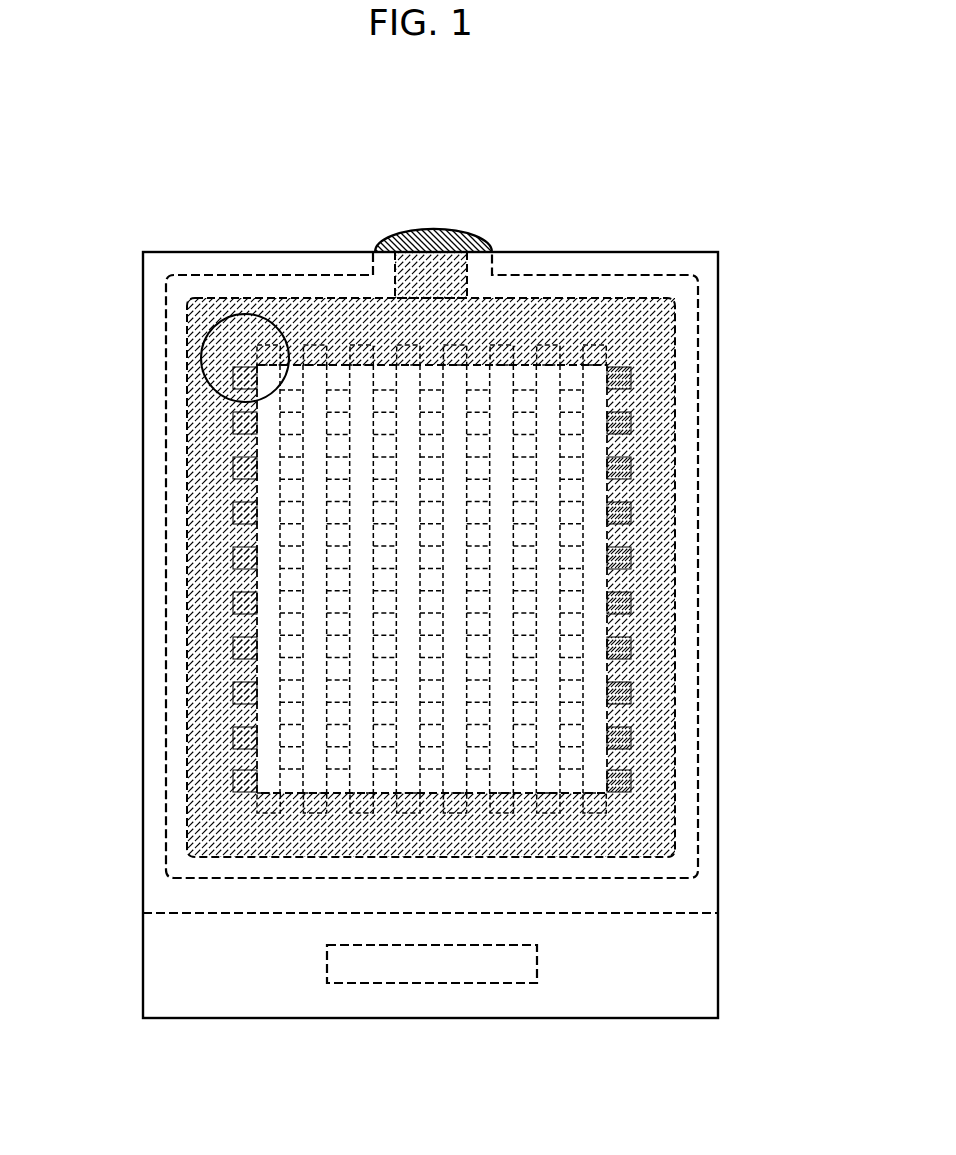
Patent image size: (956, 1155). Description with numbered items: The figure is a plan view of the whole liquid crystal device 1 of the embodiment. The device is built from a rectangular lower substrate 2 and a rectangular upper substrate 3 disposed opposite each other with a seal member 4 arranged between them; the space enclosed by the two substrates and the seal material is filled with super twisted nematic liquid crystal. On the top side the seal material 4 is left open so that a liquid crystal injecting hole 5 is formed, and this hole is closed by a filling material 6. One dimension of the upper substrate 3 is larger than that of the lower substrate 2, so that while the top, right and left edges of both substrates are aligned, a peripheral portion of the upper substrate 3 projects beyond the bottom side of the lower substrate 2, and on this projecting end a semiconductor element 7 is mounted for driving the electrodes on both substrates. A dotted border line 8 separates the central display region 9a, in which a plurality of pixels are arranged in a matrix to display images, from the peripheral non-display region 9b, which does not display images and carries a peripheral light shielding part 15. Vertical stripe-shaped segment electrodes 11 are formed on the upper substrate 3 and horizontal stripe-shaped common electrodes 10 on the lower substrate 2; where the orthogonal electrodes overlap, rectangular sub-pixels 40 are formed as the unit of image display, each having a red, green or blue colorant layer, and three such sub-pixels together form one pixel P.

The liquid crystal device 1 is at (446, 170).
The lower substrate 2 is at (256, 263).
The upper substrate 3 is at (185, 1018).
The seal member 4 is at (578, 292).
The liquid crystal injecting hole 5 is at (400, 246).
The filling material 6 is at (455, 233).
The semiconductor element 7 is at (416, 967).
The border line 8 is at (313, 340).
The display region 9a is at (368, 413).
The non-display region 9b is at (358, 296).
The common electrode 10 is at (192, 358).
The segment electrode 11 is at (270, 343).
The peripheral light shielding part 15 is at (663, 458).
The sub-pixel 40 is at (262, 374).
The pixel P is at (208, 427).